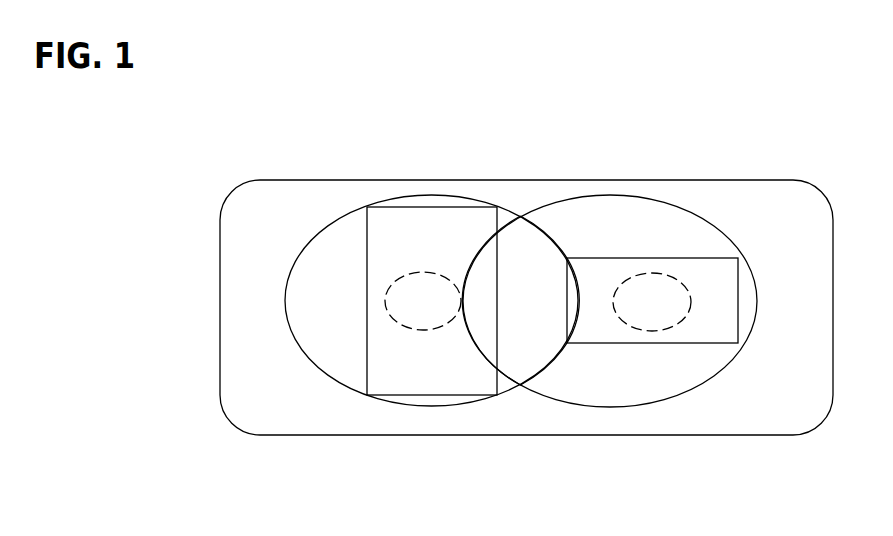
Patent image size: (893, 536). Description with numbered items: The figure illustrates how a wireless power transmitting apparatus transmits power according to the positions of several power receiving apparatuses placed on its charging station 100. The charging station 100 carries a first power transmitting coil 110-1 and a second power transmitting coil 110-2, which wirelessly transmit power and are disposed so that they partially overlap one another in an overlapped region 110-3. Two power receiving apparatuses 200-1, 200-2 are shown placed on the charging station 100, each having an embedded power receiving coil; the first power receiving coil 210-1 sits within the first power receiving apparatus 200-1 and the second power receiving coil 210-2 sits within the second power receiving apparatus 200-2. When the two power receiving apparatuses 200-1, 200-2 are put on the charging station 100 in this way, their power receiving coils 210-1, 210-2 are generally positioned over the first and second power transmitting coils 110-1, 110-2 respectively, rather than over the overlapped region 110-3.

The charging station 100 is at (751, 193).
The first power transmitting coil 110-1 is at (284, 301).
The second power transmitting coil 110-2 is at (560, 400).
The overlapped region 110-3 is at (522, 244).
The first power receiving apparatus 200-1 is at (365, 372).
The second power receiving apparatus 200-2 is at (678, 343).
The first power receiving coil 210-1 is at (434, 271).
The second power receiving coil 210-2 is at (665, 273).